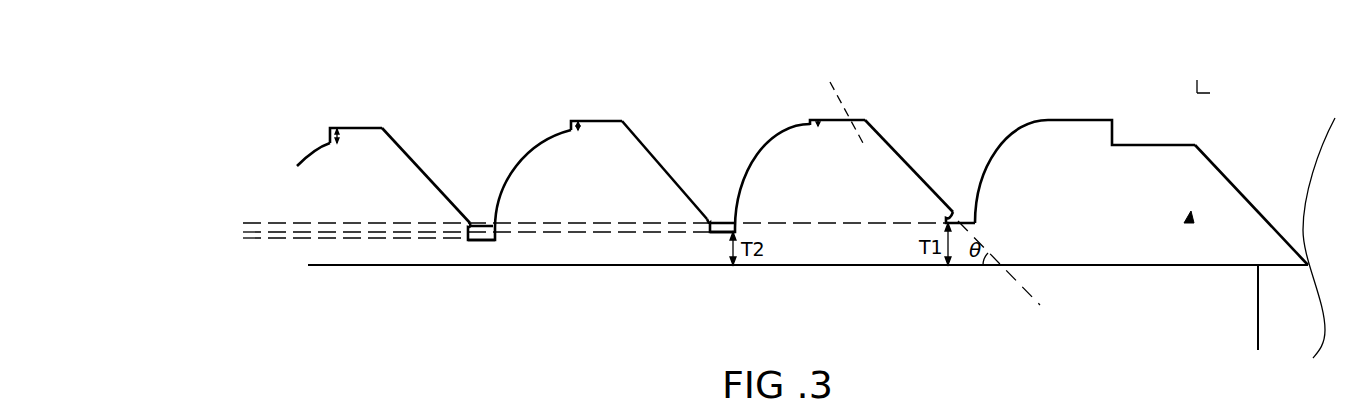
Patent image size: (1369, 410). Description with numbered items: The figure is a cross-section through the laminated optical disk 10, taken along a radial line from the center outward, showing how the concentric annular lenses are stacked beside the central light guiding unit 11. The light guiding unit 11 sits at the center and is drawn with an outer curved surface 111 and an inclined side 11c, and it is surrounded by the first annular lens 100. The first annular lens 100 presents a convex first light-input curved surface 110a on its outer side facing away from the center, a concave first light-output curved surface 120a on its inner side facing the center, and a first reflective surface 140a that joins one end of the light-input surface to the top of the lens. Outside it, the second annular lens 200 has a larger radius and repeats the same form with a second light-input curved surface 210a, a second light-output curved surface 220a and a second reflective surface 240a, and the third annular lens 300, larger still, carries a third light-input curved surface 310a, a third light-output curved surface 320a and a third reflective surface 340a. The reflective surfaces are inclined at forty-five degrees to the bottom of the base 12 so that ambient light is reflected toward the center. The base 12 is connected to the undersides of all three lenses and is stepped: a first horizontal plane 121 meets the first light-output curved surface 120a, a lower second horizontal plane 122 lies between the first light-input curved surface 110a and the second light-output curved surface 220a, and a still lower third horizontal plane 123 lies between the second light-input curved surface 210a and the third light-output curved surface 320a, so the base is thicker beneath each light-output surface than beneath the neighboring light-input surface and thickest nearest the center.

The laminated optical disk 10 is at (1197, 93).
The light guiding unit 11 is at (1170, 155).
The inclined side surface of body 11c is at (1253, 203).
The curved surface of body 111 is at (1028, 128).
The base 12 is at (863, 250).
The first horizontal plane 121 is at (960, 268).
The second horizontal plane 122 is at (720, 238).
The third horizontal plane 123 is at (477, 242).
The first annular lens 100 is at (858, 128).
The first light-input curved surface 110a is at (792, 132).
The first light-output curved surface 120a is at (950, 218).
The first reflective surface 140a is at (910, 160).
The second annular lens 200 is at (613, 138).
The second light-input curved surface 210a is at (551, 138).
The second light-output curved surface 220a is at (710, 223).
The second reflective surface 240a is at (667, 167).
The third annular lens 300 is at (377, 142).
The third light-input curved surface 310a is at (312, 153).
The third light-output curved surface 320a is at (480, 226).
The third reflective surface 340a is at (426, 167).